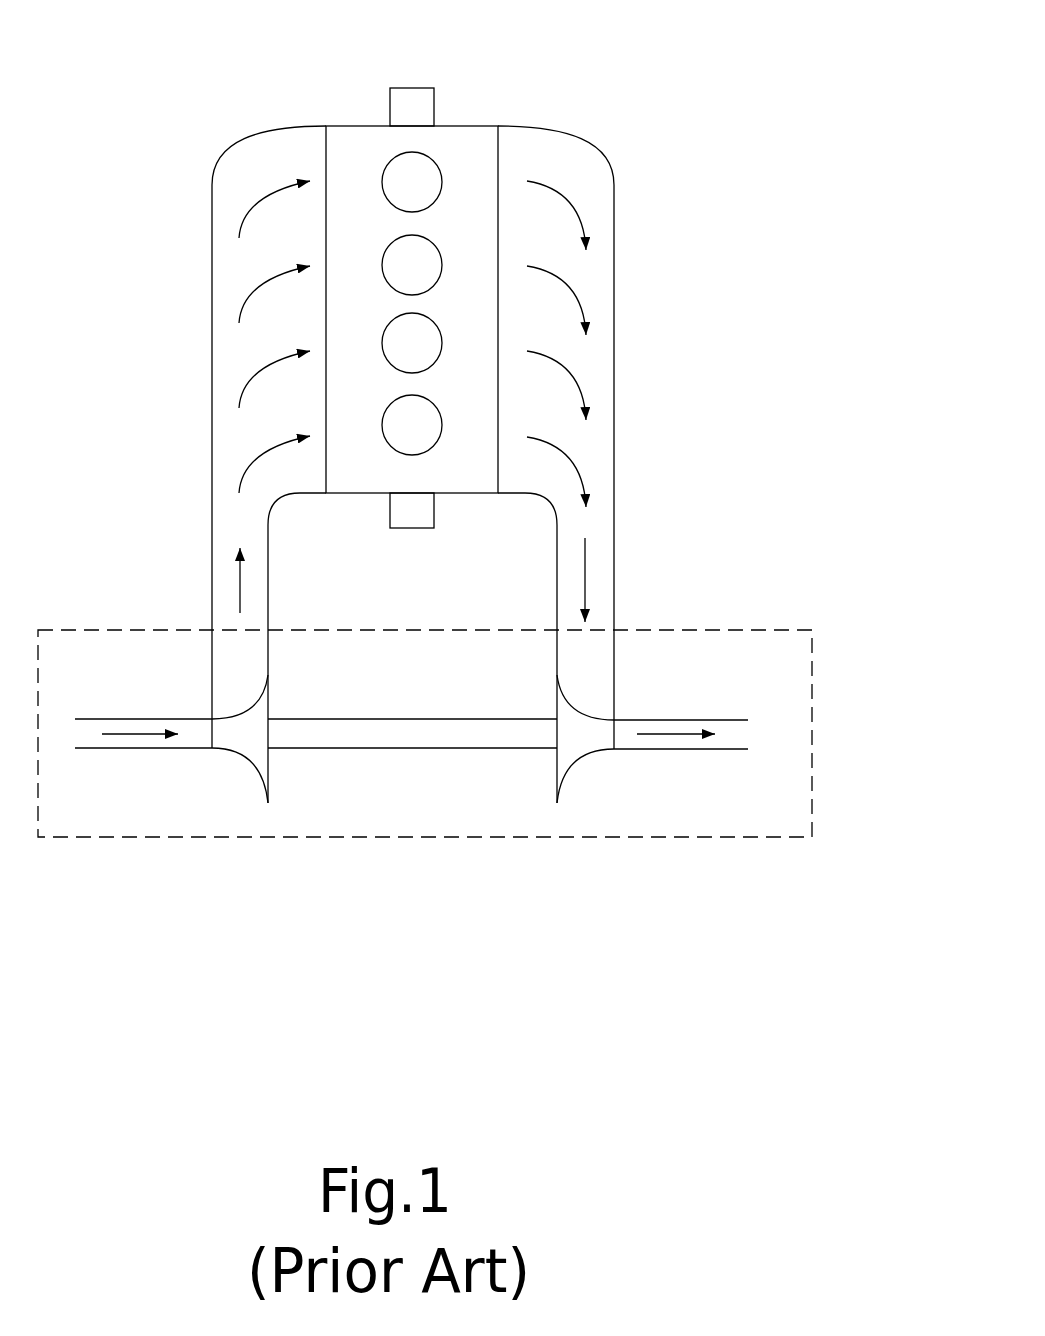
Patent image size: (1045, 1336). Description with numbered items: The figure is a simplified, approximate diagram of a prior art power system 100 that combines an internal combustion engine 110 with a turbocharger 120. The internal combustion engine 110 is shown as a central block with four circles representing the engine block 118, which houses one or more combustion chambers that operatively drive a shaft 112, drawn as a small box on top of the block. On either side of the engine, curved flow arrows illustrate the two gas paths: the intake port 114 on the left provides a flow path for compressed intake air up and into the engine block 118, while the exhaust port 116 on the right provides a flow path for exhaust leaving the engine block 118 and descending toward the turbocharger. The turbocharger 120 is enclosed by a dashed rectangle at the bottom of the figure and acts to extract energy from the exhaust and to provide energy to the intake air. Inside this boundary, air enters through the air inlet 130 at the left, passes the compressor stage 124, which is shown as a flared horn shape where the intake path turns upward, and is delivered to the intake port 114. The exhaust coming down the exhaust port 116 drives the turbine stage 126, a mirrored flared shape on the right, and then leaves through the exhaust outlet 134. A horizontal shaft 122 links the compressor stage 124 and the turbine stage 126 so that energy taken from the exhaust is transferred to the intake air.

The power system 100 is at (608, 36).
The internal combustion engine 110 is at (368, 124).
The shaft 112 is at (413, 88).
The intake port 114 is at (233, 145).
The exhaust port 116 is at (610, 160).
The engine block 118 is at (436, 488).
The turbocharger 120 is at (683, 630).
The shaft 122 is at (412, 750).
The compressor stage 124 is at (270, 690).
The turbine stage 126 is at (556, 688).
The air inlet 130 is at (165, 718).
The exhaust outlet 134 is at (685, 719).